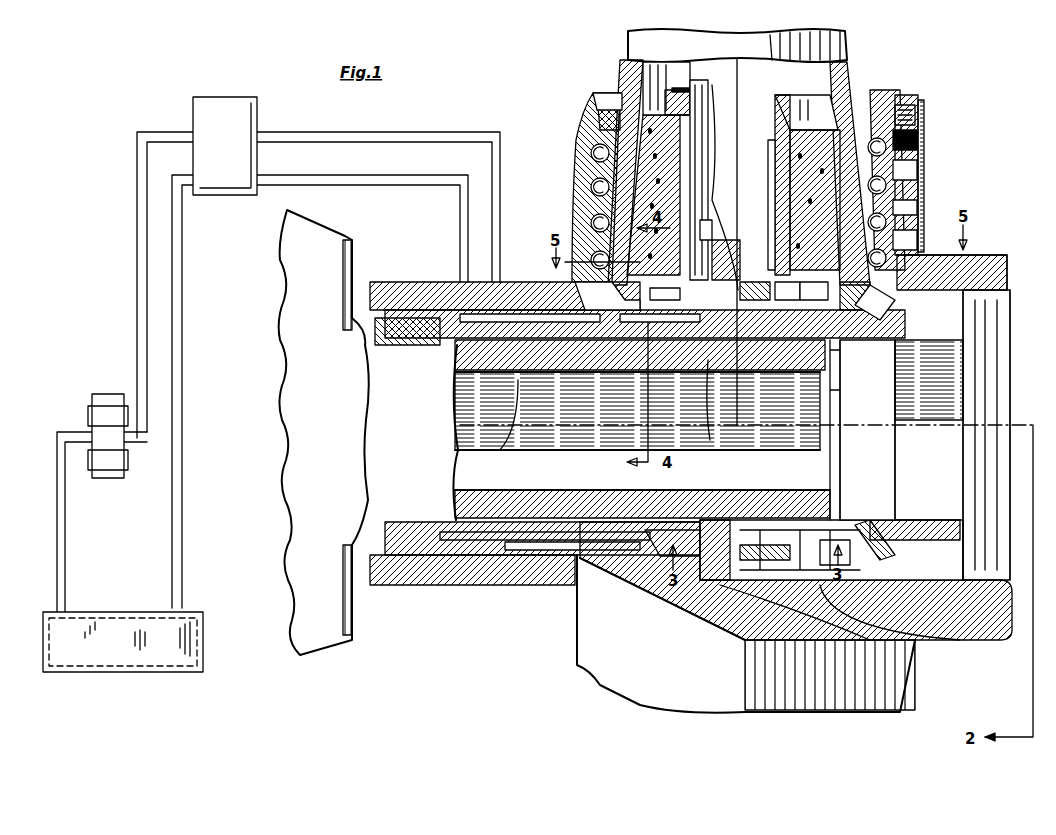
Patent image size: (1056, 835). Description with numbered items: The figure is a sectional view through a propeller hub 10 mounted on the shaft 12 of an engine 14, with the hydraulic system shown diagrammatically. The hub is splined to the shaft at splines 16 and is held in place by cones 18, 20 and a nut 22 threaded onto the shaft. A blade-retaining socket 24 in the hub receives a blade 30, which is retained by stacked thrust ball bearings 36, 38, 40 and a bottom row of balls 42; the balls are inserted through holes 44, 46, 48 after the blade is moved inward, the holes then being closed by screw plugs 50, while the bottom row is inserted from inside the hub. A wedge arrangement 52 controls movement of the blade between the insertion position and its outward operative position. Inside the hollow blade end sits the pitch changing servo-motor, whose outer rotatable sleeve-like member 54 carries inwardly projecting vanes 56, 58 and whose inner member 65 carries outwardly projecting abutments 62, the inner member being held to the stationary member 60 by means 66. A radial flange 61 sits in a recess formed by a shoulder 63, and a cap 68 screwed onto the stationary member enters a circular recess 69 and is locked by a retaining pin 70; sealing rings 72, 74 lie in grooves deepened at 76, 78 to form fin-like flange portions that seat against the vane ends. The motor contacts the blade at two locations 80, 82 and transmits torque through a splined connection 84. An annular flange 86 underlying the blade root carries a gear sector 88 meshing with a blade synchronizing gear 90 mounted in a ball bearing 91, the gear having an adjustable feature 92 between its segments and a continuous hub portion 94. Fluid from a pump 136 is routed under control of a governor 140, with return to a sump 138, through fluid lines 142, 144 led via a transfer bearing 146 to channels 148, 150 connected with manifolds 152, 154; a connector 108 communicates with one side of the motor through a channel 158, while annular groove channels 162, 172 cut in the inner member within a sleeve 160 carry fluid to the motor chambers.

The hub 10 is at (560, 270).
The shaft 12 is at (502, 423).
The engine 14 is at (341, 249).
The splines 16 is at (568, 375).
The cone 18 is at (416, 345).
The cone 20 is at (714, 410).
The nut 22 is at (873, 340).
The blade-retaining socket 24 is at (582, 152).
The blade 30 is at (840, 83).
The thrust ball bearing 36 is at (592, 150).
The thrust ball bearing 38 is at (592, 188).
The thrust ball bearing 40 is at (592, 221).
The bottom row of balls 42 is at (592, 242).
The hole 44 is at (897, 140).
The hole 46 is at (920, 182).
The hole 48 is at (910, 225).
The screw plug 50 is at (916, 155).
The wedge arrangement 52 is at (925, 642).
The outer rotatable sleeve-like member 54 is at (908, 141).
The vane 56 is at (780, 118).
The vane 58 is at (675, 155).
The stationary member 60 is at (778, 167).
The radial flange 61 is at (789, 292).
The abutment 62 is at (817, 301).
The shoulder 63 is at (860, 276).
The inner member 65 is at (776, 138).
The means for preventing motion 66 is at (793, 200).
The cap 68 is at (870, 75).
The circular recess 69 is at (887, 100).
The retaining pin 70 is at (708, 87).
The sealing ring 72 is at (607, 296).
The sealing ring 74 is at (608, 92).
The fin-like flange portion 76 is at (640, 355).
The fin-like flange portion 78 is at (630, 87).
The contact location 80 is at (589, 263).
The contact location 82 is at (597, 120).
The splined connection 84 is at (592, 238).
The annular flange 86 is at (645, 324).
The gear sector 88 is at (815, 200).
The blade synchronizing gear 90 is at (883, 492).
The ball bearing 91 is at (1008, 638).
The adjustable feature 92 is at (900, 340).
The hub portion 94 is at (858, 338).
The connector 108 is at (669, 295).
The pump 136 is at (106, 394).
The sump 138 is at (154, 617).
The governor 140 is at (216, 110).
The fluid line 142 is at (395, 134).
The fluid line 144 is at (394, 180).
The transfer bearing 146 is at (445, 282).
The channel 148 is at (523, 548).
The channel 150 is at (566, 558).
The manifold 152 is at (655, 560).
The manifold 154 is at (640, 550).
The channel 158 is at (735, 260).
The sleeve 160 is at (722, 225).
The fluid channel 162 is at (710, 175).
The channel 172 is at (716, 241).